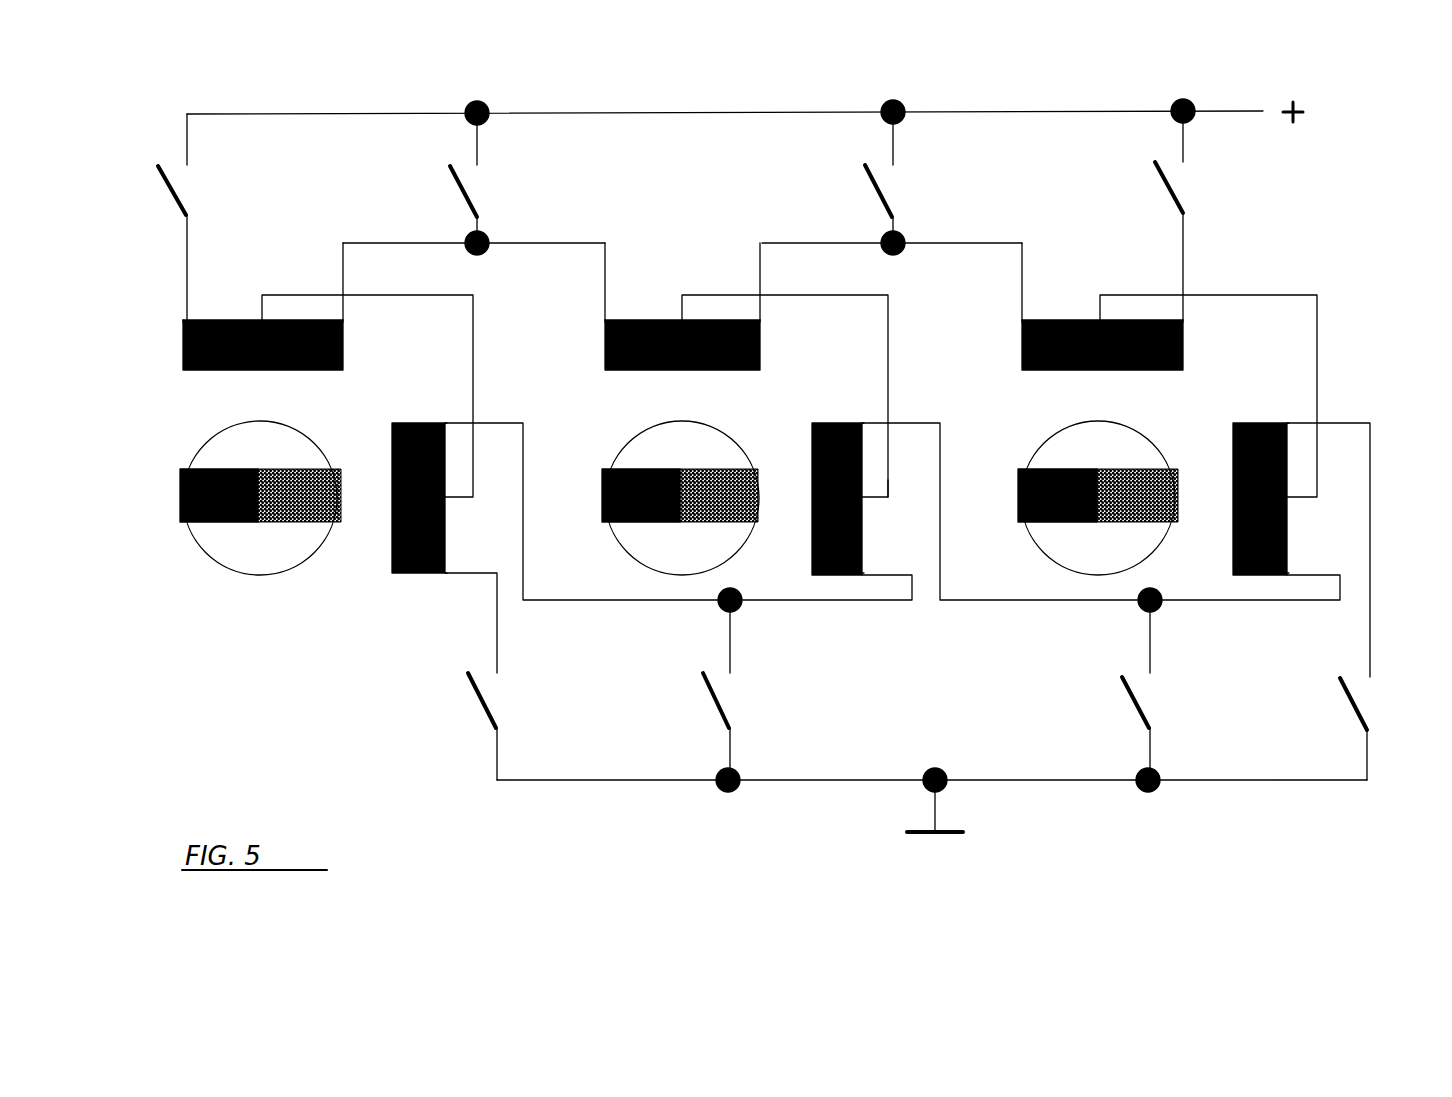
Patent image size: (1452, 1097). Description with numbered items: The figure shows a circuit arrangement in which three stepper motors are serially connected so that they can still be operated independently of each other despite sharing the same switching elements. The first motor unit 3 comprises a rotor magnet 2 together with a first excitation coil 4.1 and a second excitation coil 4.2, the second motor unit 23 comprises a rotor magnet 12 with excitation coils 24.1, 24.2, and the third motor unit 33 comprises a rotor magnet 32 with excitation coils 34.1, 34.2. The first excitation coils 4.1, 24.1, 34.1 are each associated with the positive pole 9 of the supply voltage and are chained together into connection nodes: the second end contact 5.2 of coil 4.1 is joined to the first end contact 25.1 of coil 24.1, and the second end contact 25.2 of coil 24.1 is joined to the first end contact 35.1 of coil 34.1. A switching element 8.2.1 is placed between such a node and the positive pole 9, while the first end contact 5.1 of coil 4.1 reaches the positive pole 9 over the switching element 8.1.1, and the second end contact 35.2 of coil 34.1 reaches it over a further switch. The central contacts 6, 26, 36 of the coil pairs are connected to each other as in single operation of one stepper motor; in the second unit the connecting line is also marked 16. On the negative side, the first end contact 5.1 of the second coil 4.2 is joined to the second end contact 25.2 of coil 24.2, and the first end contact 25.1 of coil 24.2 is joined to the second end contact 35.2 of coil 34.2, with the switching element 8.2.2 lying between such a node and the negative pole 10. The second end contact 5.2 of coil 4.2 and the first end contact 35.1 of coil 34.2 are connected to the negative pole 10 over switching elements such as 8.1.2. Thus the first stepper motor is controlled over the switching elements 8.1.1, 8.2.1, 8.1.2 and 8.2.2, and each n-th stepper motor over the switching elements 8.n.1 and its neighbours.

The rotor magnet 2 is at (242, 555).
The first motor unit 3 is at (187, 402).
The first excitation coil 4.1 is at (176, 357).
The second excitation coil 4.2 is at (398, 584).
The first end contact 5.1 is at (173, 326).
The second end contact 5.2 is at (348, 318).
The central contact 6 is at (252, 310).
The switching element 8.1.1 is at (193, 194).
The switching element 8.2.1 is at (488, 186).
The switching element 8.n.1 is at (898, 185).
The switching element 8.1.2 is at (498, 687).
The switching element 8.2.2 is at (737, 686).
The positive pole 9 is at (745, 94).
The negative pole 10 is at (932, 811).
The rotor magnet of second unit 12 is at (648, 547).
The connecting line of second unit 16 is at (870, 506).
The second motor unit 23 is at (603, 402).
The first excitation coil 24.1 is at (595, 356).
The second excitation coil 24.2 is at (813, 585).
The first end contact 25.1 is at (599, 318).
The second end contact 25.2 is at (850, 442).
The central contact 26 is at (675, 317).
The rotor magnet of third unit 32 is at (1070, 547).
The third motor unit 33 is at (1027, 398).
The first excitation coil 34.1 is at (1015, 352).
The second excitation coil 34.2 is at (1242, 582).
The first end contact 35.1 is at (1015, 313).
The second end contact 35.2 is at (1323, 610).
The central contact 36 is at (1093, 310).